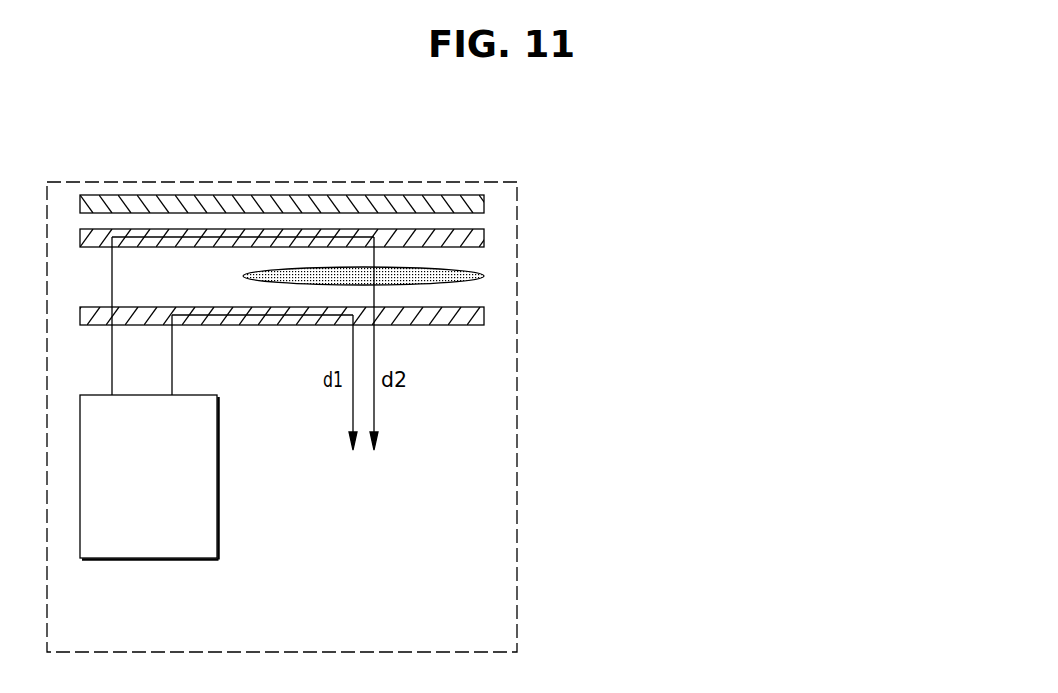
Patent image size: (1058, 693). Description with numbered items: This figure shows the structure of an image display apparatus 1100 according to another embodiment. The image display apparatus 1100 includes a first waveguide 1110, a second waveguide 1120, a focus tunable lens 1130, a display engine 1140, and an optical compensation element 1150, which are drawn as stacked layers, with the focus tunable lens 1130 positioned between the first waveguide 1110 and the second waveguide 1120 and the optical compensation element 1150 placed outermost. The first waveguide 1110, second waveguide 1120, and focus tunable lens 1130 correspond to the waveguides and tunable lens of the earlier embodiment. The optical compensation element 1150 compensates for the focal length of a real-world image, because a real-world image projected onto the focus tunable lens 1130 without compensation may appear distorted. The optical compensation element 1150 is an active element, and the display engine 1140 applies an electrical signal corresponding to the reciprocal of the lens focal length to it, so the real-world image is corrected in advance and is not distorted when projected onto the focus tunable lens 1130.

The image display apparatus 1100 is at (452, 182).
The first waveguide 1110 is at (484, 316).
The second waveguide 1120 is at (484, 238).
The focus tunable lens 1130 is at (484, 277).
The display engine 1140 is at (149, 477).
The optical compensation element 1150 is at (484, 204).